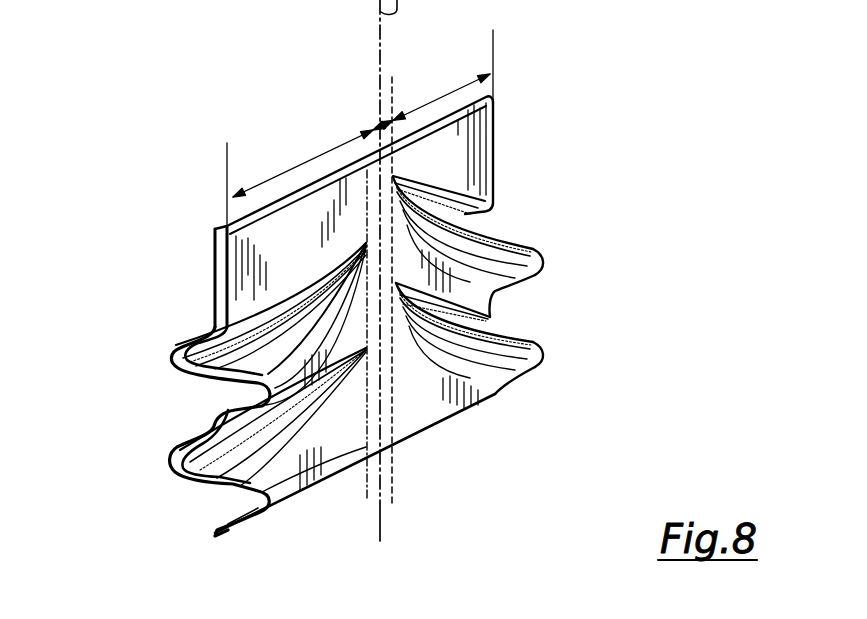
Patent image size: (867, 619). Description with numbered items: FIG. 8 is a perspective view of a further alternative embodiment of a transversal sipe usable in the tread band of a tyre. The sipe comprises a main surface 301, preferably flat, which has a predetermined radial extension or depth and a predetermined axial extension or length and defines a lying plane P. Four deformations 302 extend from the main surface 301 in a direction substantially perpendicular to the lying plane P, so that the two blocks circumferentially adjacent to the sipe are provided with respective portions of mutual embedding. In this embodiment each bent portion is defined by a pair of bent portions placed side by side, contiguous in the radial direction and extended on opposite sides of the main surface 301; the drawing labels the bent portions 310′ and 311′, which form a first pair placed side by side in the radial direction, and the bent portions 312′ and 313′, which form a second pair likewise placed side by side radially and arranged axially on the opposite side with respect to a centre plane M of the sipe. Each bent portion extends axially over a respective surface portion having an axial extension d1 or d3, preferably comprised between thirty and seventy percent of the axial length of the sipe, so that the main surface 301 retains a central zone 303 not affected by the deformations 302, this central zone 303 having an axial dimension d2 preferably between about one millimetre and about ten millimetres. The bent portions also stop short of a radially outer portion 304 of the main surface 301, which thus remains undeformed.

The main surface 301 is at (423, 408).
The deformations 302 is at (148, 350).
The central zone 303 is at (385, 420).
The radially outer portion 304 is at (430, 160).
The bent portion 310′ is at (269, 505).
The bent portion 311′ is at (273, 366).
The bent portion 312′ is at (550, 373).
The bent portion 313′ is at (545, 260).
The axial extension d1 is at (282, 172).
The axial dimension d2 is at (375, 128).
The axial extension d3 is at (434, 100).
The lying plane P is at (496, 104).
The centre plane M is at (379, 518).